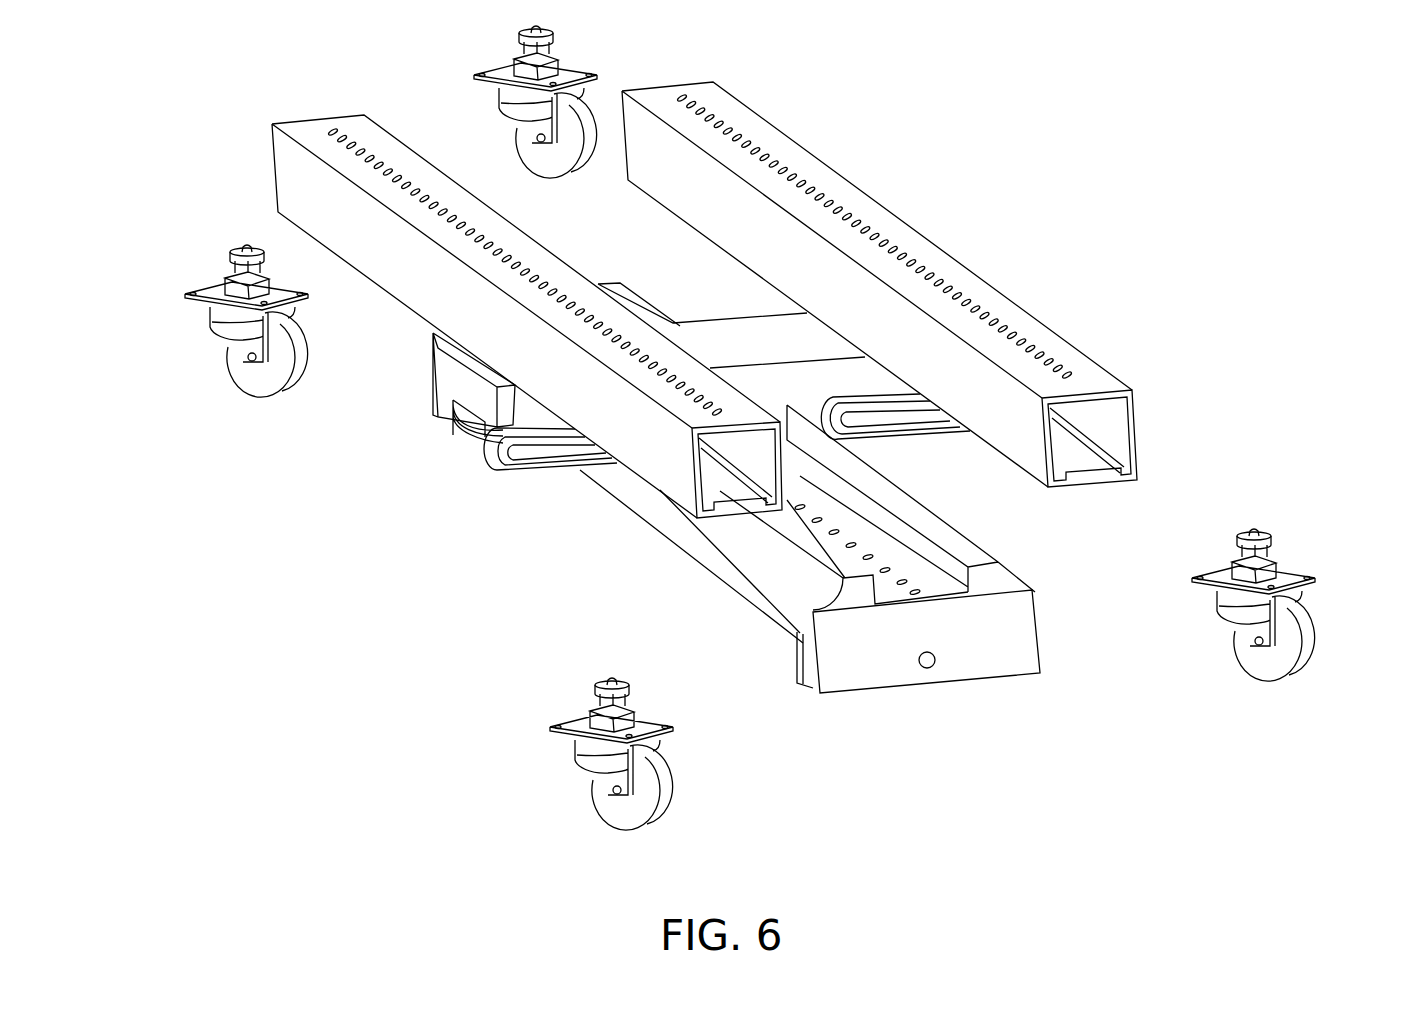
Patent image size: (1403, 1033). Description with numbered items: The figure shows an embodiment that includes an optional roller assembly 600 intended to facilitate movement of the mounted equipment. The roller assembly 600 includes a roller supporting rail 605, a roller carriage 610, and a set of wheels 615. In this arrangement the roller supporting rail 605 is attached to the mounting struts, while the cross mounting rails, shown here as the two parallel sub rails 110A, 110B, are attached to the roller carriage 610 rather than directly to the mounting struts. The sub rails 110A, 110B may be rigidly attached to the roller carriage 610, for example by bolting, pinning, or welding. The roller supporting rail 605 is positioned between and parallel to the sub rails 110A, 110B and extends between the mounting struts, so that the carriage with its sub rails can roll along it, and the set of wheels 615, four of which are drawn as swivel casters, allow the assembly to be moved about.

The roller assembly 600 is at (1029, 158).
The roller supporting rail 605 is at (996, 572).
The roller carriage 610 is at (437, 385).
The sub rail 110A is at (663, 453).
The sub rail 110B is at (993, 305).
The set of wheels 615 is at (560, 66).